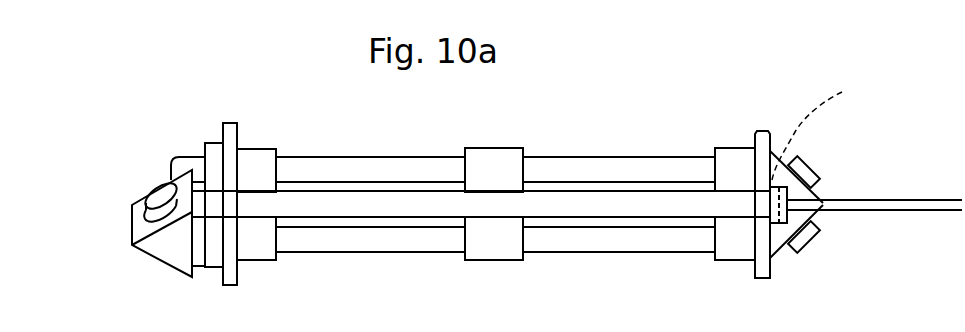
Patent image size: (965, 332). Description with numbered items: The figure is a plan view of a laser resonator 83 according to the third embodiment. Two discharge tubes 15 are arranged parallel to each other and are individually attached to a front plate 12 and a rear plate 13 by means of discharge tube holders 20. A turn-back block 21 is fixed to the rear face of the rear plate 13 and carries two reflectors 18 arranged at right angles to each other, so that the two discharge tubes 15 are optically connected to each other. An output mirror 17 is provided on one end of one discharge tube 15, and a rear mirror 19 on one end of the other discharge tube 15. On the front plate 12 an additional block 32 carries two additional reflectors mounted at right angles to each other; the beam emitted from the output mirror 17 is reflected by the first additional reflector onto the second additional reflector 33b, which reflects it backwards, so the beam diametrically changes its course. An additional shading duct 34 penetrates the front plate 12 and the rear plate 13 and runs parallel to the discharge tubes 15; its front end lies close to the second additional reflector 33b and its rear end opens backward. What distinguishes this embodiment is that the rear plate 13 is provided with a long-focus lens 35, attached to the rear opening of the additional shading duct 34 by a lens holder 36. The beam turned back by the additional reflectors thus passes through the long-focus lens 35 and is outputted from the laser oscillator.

The front plate 12 is at (235, 134).
The rear plate 13 is at (773, 150).
The discharge tube 15 is at (409, 170).
The output mirror 17 is at (212, 256).
The reflector 18 is at (817, 170).
The rear mirror 19 is at (182, 165).
The discharge tube holder 20 is at (265, 157).
The turn-back block 21 is at (778, 243).
The additional block 32 is at (167, 252).
The second additional reflector 33b is at (155, 197).
The additional shading duct 34 is at (576, 200).
The long-focus lens 35 is at (825, 140).
The lens holder 36 is at (800, 157).
The laser resonator 83 is at (658, 143).